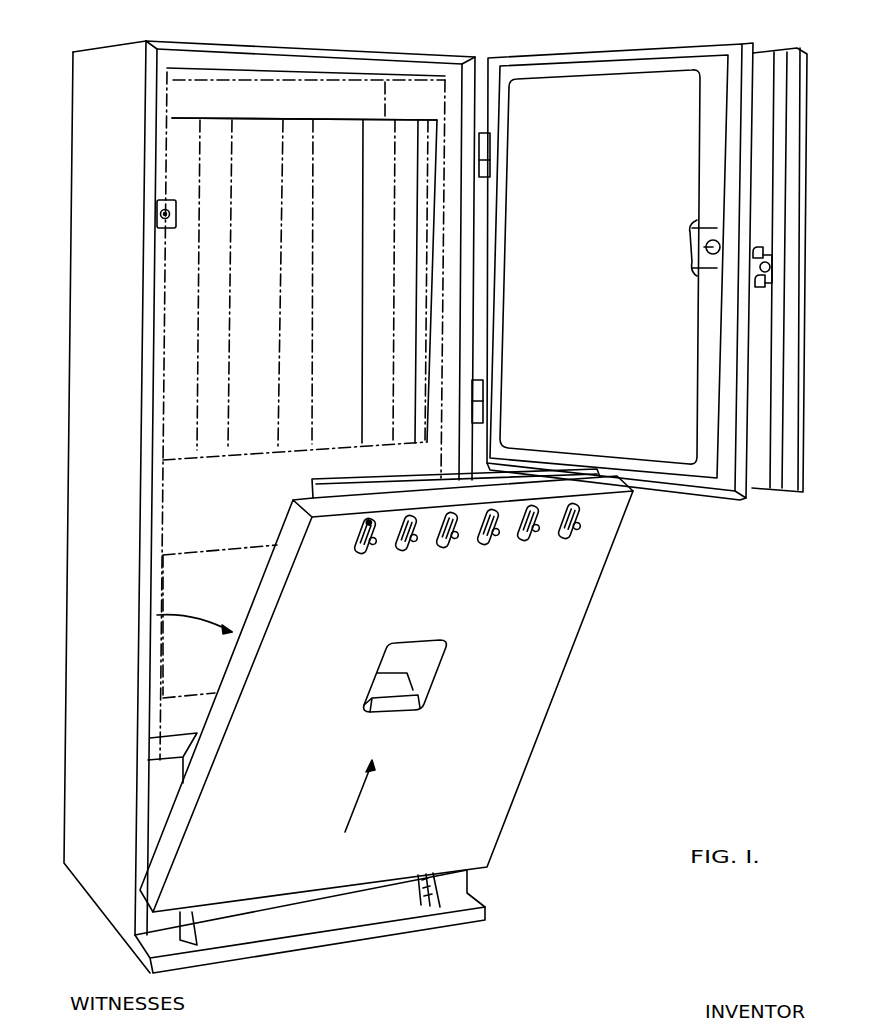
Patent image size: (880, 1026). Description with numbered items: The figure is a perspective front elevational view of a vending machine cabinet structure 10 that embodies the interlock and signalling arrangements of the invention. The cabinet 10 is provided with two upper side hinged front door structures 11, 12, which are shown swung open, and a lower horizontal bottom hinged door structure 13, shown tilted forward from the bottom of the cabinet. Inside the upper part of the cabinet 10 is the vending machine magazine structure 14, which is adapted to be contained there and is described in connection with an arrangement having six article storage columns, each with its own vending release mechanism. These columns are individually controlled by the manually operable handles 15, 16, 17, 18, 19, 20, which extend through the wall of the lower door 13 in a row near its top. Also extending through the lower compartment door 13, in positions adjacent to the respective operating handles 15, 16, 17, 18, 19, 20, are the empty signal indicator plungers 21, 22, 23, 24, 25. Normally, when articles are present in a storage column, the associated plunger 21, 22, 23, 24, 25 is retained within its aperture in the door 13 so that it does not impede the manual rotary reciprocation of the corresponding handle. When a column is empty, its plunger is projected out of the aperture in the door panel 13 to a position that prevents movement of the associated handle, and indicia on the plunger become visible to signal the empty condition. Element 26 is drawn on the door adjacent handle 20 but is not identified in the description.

The vending machine cabinet structure 10 is at (86, 240).
The upper side hinged front door structure 11 is at (770, 57).
The upper side hinged front door structure 12 is at (618, 86).
The lower horizontal bottom hinged door structure 13 is at (548, 686).
The vending machine magazine structure 14 is at (263, 265).
The manually operable handle 15 is at (366, 556).
The manually operable handle 16 is at (406, 554).
The manually operable handle 17 is at (448, 552).
The manually operable handle 18 is at (487, 550).
The manually operable handle 19 is at (529, 546).
The manually operable handle 20 is at (569, 540).
The empty signal indicator plunger 21 is at (372, 524).
The empty signal indicator plunger 22 is at (412, 522).
The empty signal indicator plunger 23 is at (458, 520).
The empty signal indicator plunger 24 is at (498, 518).
The empty signal indicator plunger 25 is at (537, 514).
The indicator button 26 is at (581, 514).